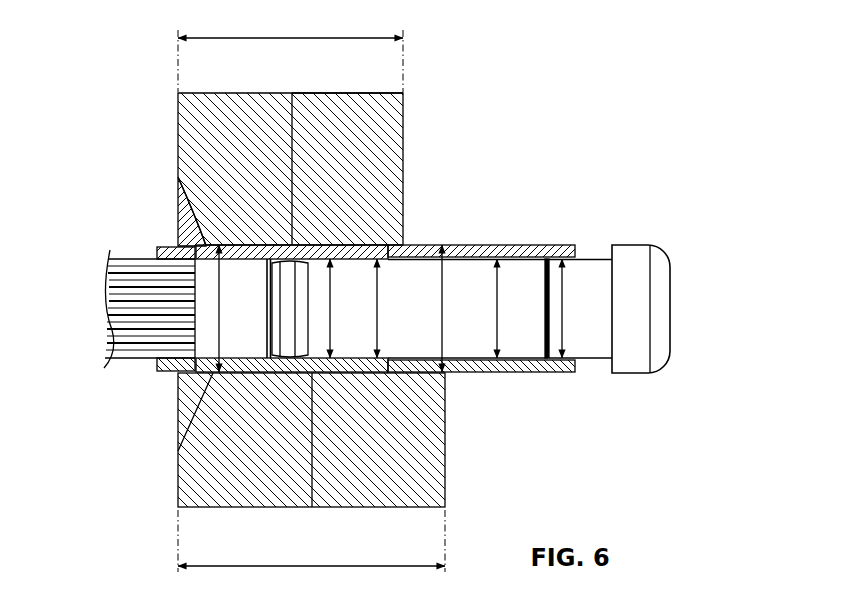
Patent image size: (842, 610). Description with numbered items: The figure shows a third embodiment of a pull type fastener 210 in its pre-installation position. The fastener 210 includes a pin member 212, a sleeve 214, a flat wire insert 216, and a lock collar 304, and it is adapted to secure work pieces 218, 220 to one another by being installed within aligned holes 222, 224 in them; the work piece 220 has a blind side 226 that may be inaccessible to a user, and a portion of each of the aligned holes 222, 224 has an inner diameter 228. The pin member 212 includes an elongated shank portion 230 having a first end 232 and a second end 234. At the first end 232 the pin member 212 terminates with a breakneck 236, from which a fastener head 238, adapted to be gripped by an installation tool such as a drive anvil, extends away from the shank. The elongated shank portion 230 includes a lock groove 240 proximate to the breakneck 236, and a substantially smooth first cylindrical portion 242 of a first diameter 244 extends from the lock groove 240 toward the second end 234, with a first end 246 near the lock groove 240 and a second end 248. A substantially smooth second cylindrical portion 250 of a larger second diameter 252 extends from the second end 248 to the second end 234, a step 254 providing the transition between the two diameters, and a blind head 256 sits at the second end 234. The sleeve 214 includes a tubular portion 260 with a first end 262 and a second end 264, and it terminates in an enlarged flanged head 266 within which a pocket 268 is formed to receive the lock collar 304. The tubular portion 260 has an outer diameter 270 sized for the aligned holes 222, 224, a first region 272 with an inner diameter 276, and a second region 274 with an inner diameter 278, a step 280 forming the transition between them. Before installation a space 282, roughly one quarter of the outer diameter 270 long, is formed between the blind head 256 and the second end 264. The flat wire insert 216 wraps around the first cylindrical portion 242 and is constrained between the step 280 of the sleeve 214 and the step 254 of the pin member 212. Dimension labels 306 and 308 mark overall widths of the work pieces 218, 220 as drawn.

The fastener 210 is at (104, 97).
The pin member 212 is at (672, 333).
The sleeve 214 is at (493, 245).
The flat wire insert 216 is at (483, 372).
The work piece 218 is at (215, 93).
The work piece 220 is at (326, 93).
The aligned hole 222 is at (237, 245).
The aligned hole 224 is at (340, 247).
The blind side 226 is at (404, 107).
The inner diameter 228 is at (224, 308).
The elongated shank portion 230 is at (363, 258).
The first end 232 is at (254, 245).
The second end 234 is at (605, 274).
The breakneck 236 is at (266, 312).
The fastener head 238 is at (125, 258).
The lock groove 240 is at (292, 374).
The first cylindrical portion 242 is at (352, 258).
The first diameter 244 is at (333, 332).
The first end 246 is at (323, 373).
The second end 248 is at (545, 340).
The second cylindrical portion 250 is at (597, 345).
The second diameter 252 is at (563, 325).
The step 254 is at (533, 258).
The blind head 256 is at (636, 254).
The tubular portion 260 is at (468, 245).
The first end 262 is at (218, 245).
The second end 264 is at (578, 250).
The flanged head 266 is at (178, 403).
The pocket 268 is at (178, 188).
The outer diameter 270 is at (442, 311).
The first region 272 is at (362, 373).
The second region 274 is at (454, 372).
The inner diameter 276 is at (380, 308).
The inner diameter 278 is at (497, 309).
The step 280 is at (388, 247).
The space 282 is at (604, 374).
The lock collar 304 is at (158, 366).
The clamp body width 306 is at (291, 37).
The lower clamp body width 308 is at (310, 568).